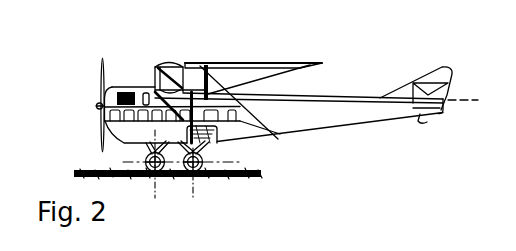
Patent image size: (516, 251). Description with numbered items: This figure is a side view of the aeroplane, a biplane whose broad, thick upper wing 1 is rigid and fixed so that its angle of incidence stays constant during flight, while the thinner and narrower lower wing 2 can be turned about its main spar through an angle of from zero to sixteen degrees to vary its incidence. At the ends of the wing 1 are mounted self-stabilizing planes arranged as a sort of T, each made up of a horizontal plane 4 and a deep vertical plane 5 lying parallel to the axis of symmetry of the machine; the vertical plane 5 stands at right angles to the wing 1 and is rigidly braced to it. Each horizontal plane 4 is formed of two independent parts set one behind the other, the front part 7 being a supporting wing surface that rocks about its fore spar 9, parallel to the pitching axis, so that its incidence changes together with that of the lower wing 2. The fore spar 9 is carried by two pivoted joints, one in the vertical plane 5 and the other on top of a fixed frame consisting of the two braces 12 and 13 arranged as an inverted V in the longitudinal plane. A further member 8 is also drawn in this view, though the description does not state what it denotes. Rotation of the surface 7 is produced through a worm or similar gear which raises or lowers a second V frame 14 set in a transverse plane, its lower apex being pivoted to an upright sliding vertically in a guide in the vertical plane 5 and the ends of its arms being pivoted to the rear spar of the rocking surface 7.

The upper wing 1 is at (192, 98).
The lower wing 2 is at (216, 137).
The horizontal plane 4 is at (221, 62).
The vertical plane 5 is at (233, 85).
The rocking wing surface 7 is at (183, 62).
The bracing wire 8 is at (245, 110).
The fore spar 9 is at (157, 70).
The brace 12 is at (156, 88).
The brace 13 is at (176, 62).
The second V frame 14 is at (184, 89).